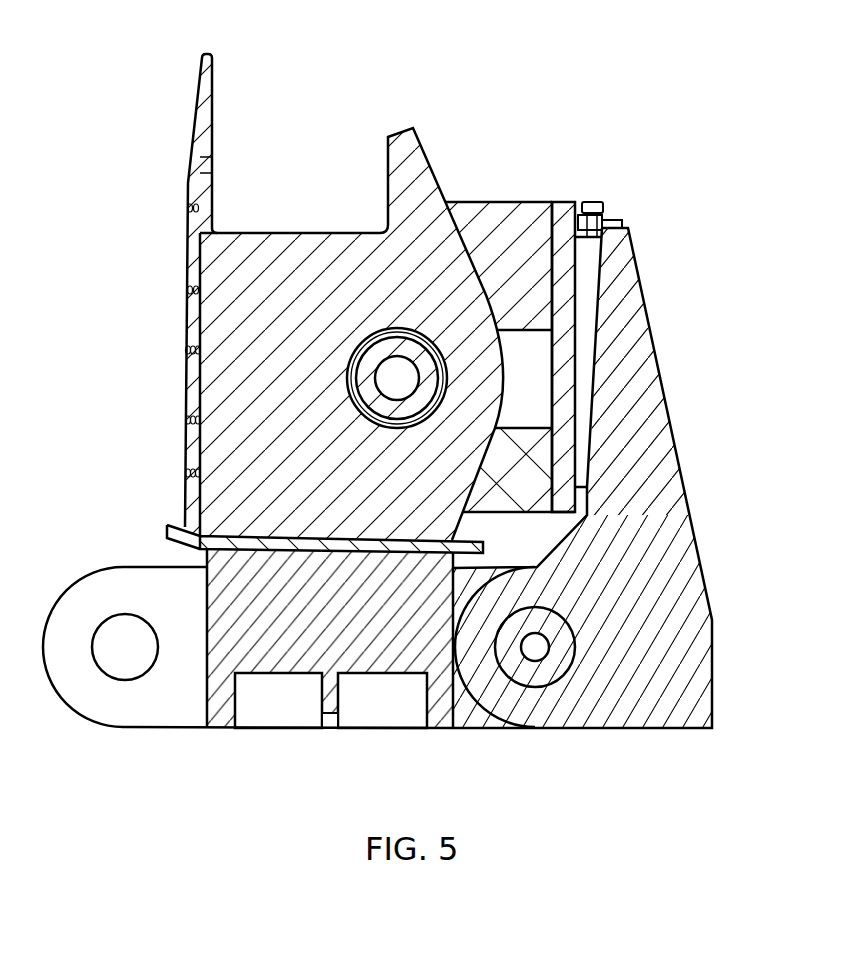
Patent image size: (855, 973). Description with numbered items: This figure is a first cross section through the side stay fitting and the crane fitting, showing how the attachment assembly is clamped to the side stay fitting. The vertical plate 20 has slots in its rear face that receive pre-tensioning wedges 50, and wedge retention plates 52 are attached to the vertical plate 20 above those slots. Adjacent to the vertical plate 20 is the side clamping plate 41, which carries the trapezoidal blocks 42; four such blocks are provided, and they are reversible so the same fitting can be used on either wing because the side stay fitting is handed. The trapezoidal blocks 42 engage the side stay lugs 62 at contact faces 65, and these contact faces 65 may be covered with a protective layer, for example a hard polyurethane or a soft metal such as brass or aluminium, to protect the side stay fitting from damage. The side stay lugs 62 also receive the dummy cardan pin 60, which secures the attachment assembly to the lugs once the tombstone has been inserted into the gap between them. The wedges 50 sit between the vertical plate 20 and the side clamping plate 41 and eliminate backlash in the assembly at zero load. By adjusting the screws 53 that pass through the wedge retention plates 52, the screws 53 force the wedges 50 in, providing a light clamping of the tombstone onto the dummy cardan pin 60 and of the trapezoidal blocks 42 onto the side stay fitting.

The vertical plate 20 is at (681, 458).
The side clamping plate 41 is at (575, 320).
The trapezoidal blocks 42 is at (522, 228).
The pre-tensioning wedges 50 is at (585, 283).
The wedge retention plates 52 is at (607, 220).
The adjusting screws 53 is at (590, 202).
The dummy cardan pin 60 is at (373, 333).
The side stay lugs 62 is at (425, 154).
The contact faces 65 is at (490, 457).